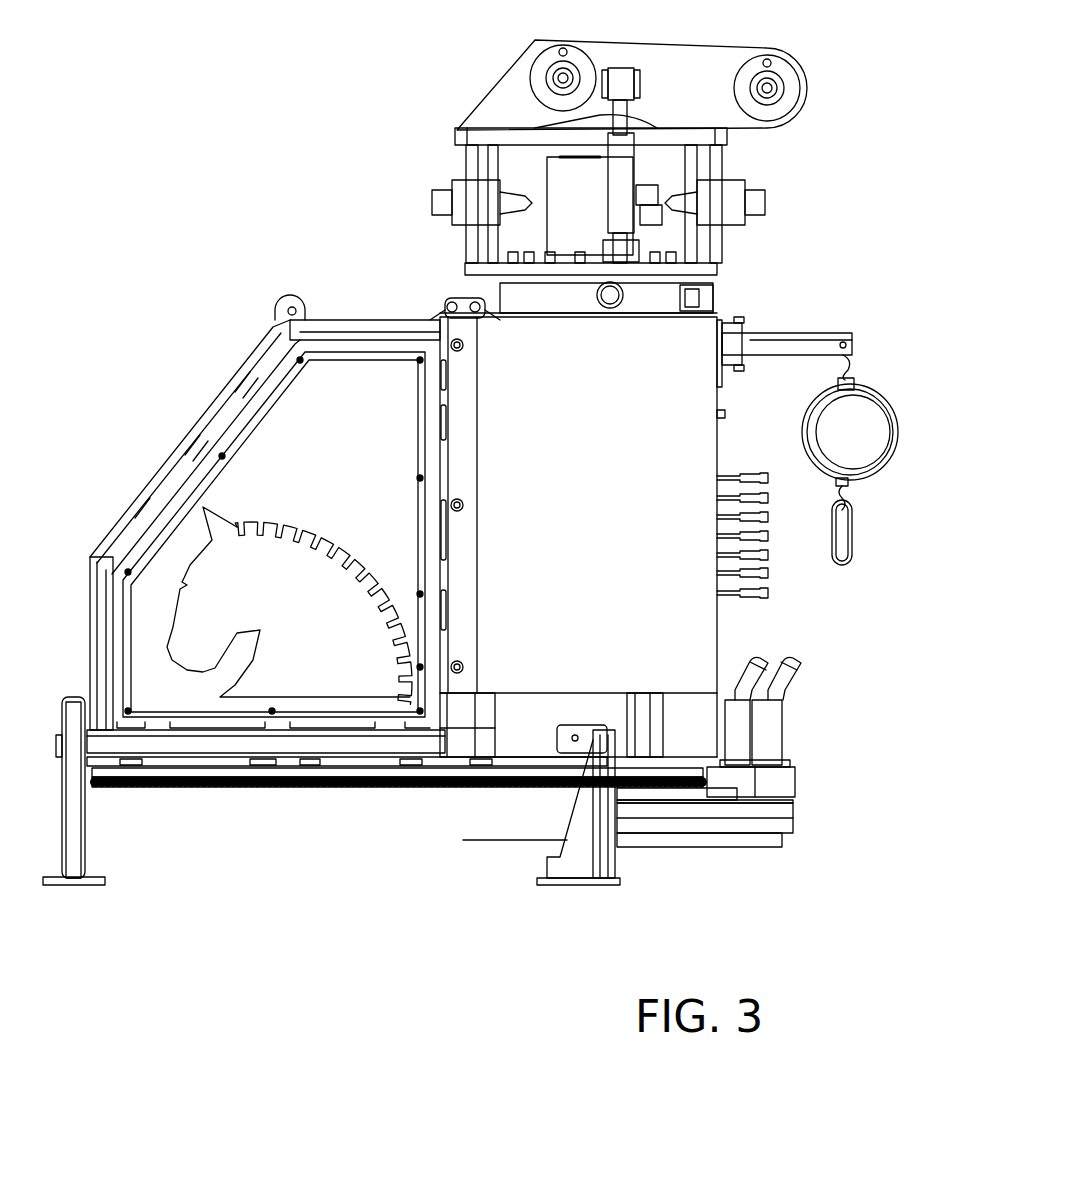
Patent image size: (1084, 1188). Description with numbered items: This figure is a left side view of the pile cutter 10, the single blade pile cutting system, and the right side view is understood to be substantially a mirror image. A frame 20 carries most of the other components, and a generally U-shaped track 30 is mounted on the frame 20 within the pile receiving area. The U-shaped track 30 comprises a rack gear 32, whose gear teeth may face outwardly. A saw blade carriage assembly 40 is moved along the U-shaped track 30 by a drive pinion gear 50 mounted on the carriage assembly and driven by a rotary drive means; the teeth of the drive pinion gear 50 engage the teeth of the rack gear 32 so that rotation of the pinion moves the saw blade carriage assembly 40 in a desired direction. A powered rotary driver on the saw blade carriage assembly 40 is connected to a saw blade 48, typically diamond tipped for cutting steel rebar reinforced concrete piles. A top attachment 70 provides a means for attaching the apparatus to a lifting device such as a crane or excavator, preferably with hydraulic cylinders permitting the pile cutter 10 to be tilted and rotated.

The pile cutter 10 is at (329, 208).
The frame 20 is at (215, 415).
The U-shaped track 30 is at (189, 800).
The rack gear 32 is at (340, 790).
The saw blade carriage assembly 40 is at (792, 822).
The saw blade 48 is at (497, 843).
The drive pinion gear 50 is at (708, 807).
The top attachment 70 is at (497, 57).